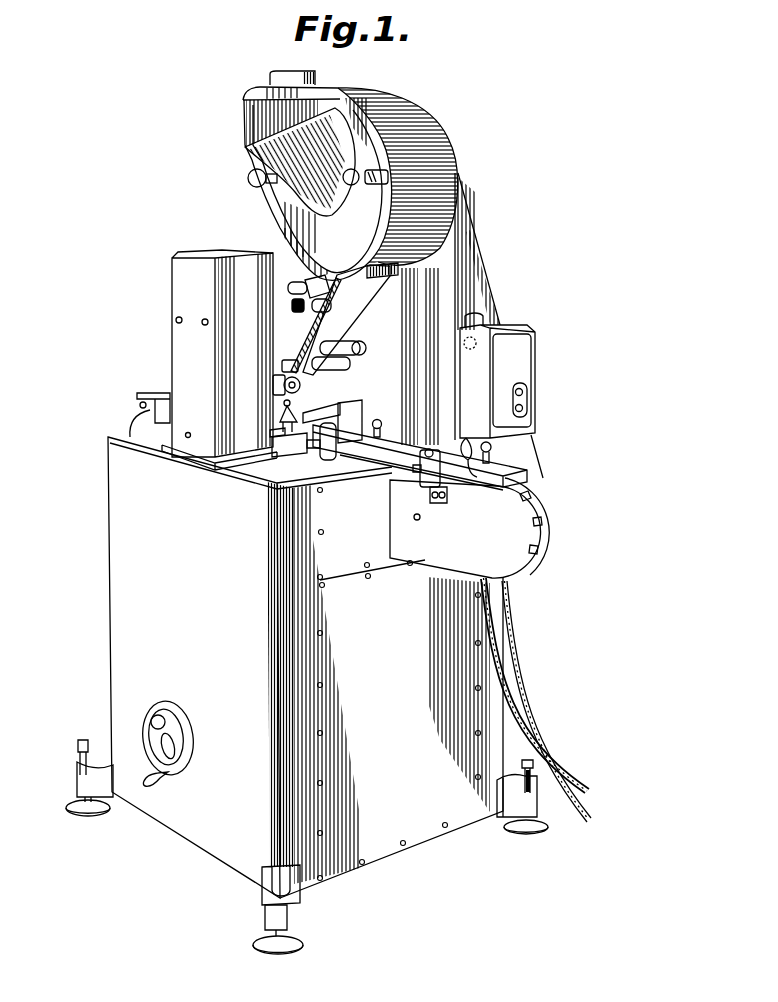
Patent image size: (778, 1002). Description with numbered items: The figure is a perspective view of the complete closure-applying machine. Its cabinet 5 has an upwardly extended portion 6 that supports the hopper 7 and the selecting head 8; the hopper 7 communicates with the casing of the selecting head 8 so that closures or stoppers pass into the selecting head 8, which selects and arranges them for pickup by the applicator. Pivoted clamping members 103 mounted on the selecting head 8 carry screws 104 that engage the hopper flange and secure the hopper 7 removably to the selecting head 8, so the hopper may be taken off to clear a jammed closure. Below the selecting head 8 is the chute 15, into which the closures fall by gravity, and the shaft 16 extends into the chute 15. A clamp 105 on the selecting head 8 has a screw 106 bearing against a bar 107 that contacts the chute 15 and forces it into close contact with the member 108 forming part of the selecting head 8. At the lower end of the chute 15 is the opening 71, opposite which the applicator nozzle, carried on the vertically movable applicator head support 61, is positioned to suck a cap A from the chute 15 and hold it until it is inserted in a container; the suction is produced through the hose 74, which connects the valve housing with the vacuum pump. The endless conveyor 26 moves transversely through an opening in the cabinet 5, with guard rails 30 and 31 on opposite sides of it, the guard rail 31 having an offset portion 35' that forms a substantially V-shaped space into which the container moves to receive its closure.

The cabinet 5 is at (395, 850).
The upwardly extended portion 6 is at (438, 300).
The hopper 7 is at (252, 155).
The selecting head 8 is at (440, 142).
The chute 15 is at (303, 327).
The shaft 16 is at (333, 347).
The endless conveyor 26 is at (530, 507).
The guard rail 30 is at (527, 472).
The guard rail 31 is at (398, 462).
The offset portion 35' is at (304, 448).
The vertically movable applicator head support 61 is at (278, 394).
The opening 71 is at (297, 357).
The hose 74 is at (273, 365).
The pivoted clamping members 103 is at (373, 185).
The screws 104 is at (350, 168).
The clamp 105 is at (310, 278).
The screw 106 is at (300, 303).
The bar 107 is at (325, 278).
The member 108 is at (348, 298).
The cap A is at (272, 432).